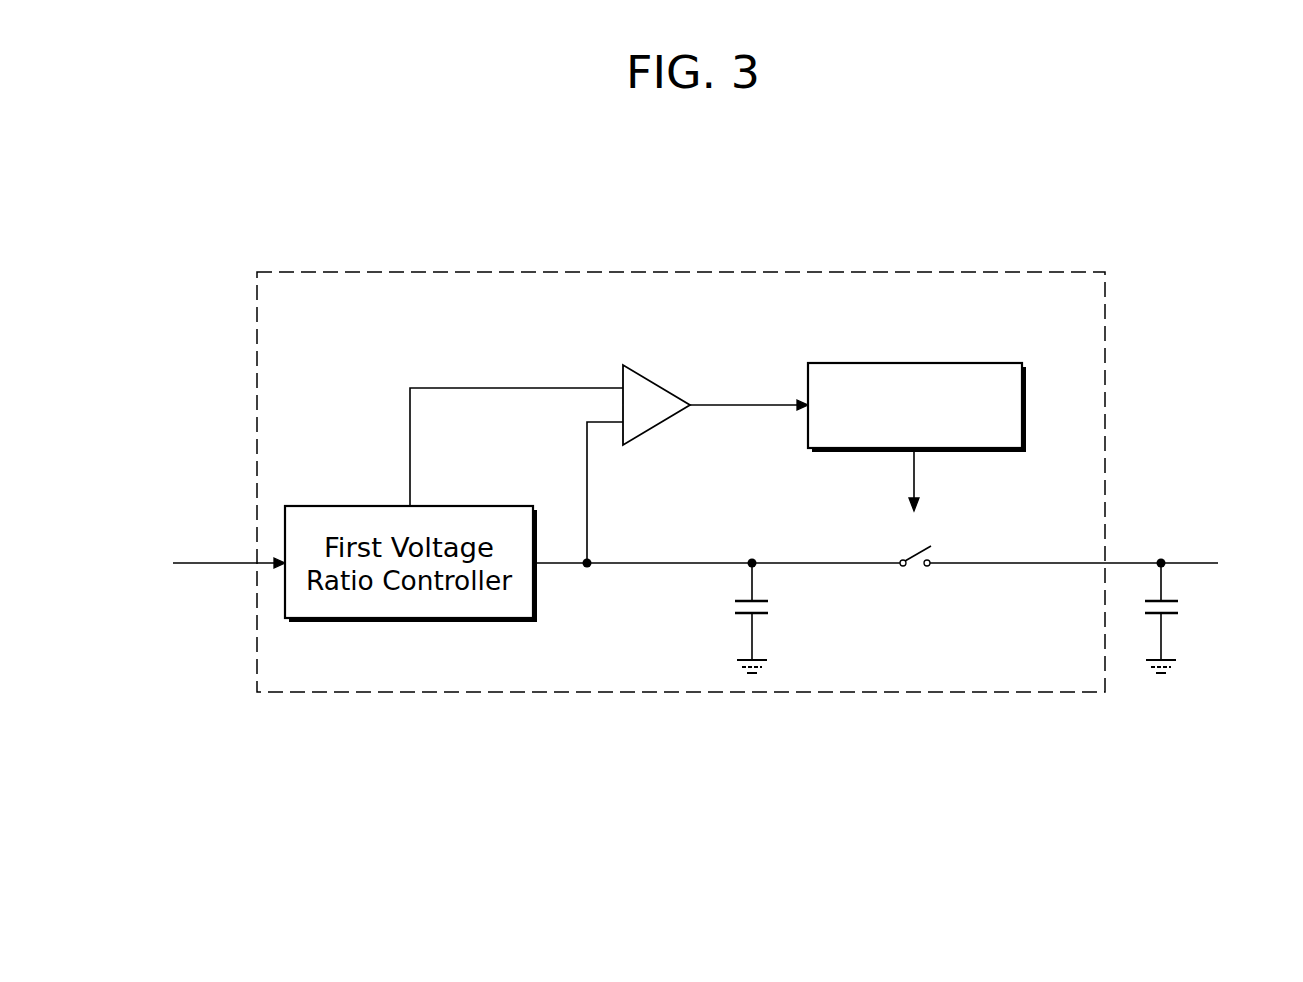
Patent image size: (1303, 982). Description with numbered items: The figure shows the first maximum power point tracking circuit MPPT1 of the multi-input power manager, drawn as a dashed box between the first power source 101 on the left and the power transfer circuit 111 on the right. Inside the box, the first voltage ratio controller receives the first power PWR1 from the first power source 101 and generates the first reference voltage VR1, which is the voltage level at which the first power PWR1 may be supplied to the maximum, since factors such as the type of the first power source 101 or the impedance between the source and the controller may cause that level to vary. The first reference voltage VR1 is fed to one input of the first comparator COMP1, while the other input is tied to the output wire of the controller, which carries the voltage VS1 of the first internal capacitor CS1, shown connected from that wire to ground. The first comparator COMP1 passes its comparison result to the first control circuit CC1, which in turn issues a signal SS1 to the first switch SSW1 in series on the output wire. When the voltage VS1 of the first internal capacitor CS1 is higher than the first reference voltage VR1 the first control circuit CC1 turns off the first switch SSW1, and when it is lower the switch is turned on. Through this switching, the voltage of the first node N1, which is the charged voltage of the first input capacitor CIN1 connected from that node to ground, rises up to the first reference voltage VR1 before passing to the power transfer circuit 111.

The first power source 101 is at (155, 577).
The power transfer circuit 111 is at (1285, 577).
The first maximum power point tracking circuit MPPT1 is at (869, 272).
The first power PWR1 is at (229, 551).
The first reference voltage VR1 is at (516, 434).
The first comparator COMP1 is at (657, 378).
The first control circuit CC1 is at (985, 363).
The switch control signal SS1 is at (936, 479).
The first switch SSW1 is at (915, 571).
The voltage of the first internal capacitor VS1 is at (752, 549).
The first internal capacitor CS1 is at (772, 618).
The first node N1 is at (1160, 549).
The first input capacitor CIN1 is at (1187, 618).